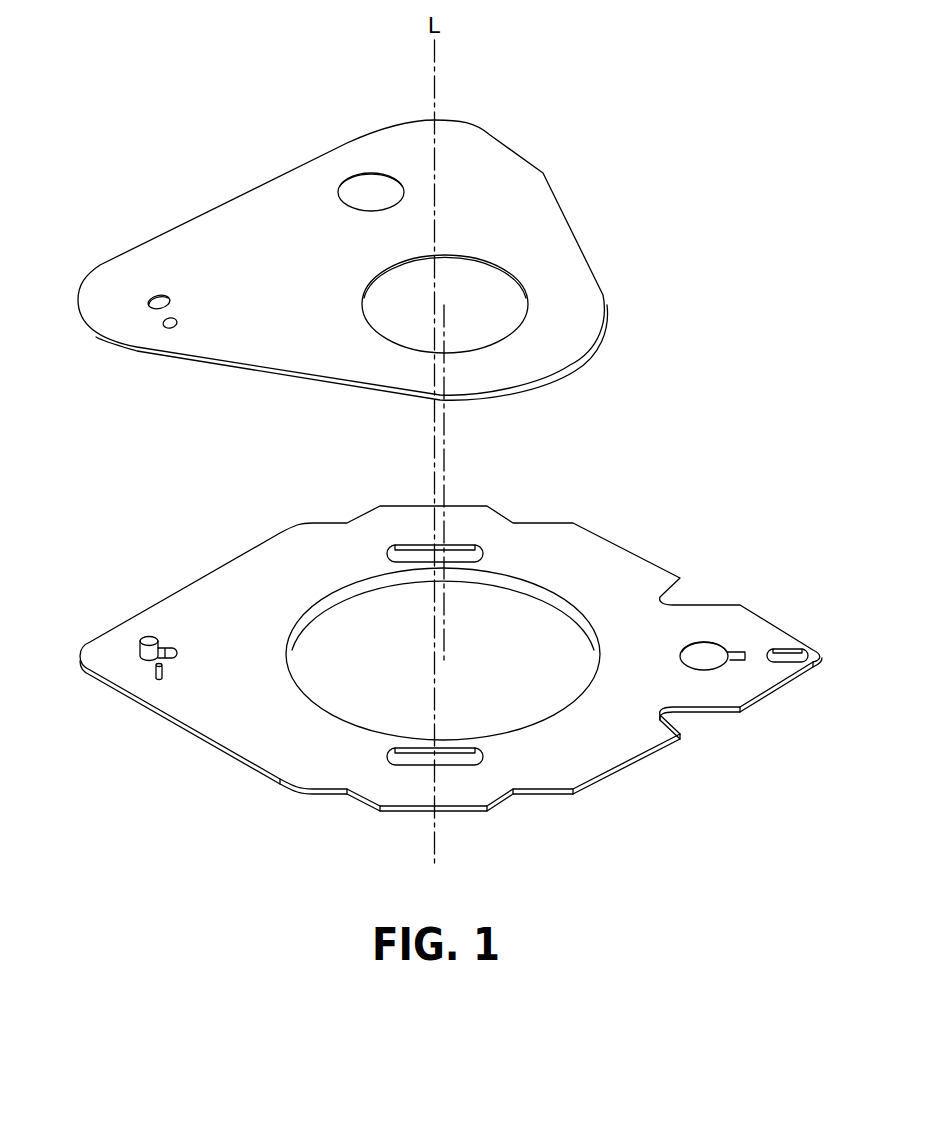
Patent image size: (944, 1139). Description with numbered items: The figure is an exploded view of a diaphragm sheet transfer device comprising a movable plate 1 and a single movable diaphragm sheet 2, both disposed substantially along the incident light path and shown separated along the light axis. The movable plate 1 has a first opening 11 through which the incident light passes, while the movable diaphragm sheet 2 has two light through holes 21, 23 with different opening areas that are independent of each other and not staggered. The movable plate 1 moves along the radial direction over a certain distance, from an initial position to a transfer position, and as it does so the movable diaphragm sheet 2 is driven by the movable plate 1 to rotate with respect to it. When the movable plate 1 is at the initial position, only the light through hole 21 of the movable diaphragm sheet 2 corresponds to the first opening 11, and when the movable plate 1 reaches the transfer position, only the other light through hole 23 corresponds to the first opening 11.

The movable plate 1 is at (451, 652).
The first opening 11 is at (548, 690).
The movable diaphragm sheet 2 is at (361, 235).
The light through hole 21 is at (493, 288).
The light through hole 23 is at (367, 190).